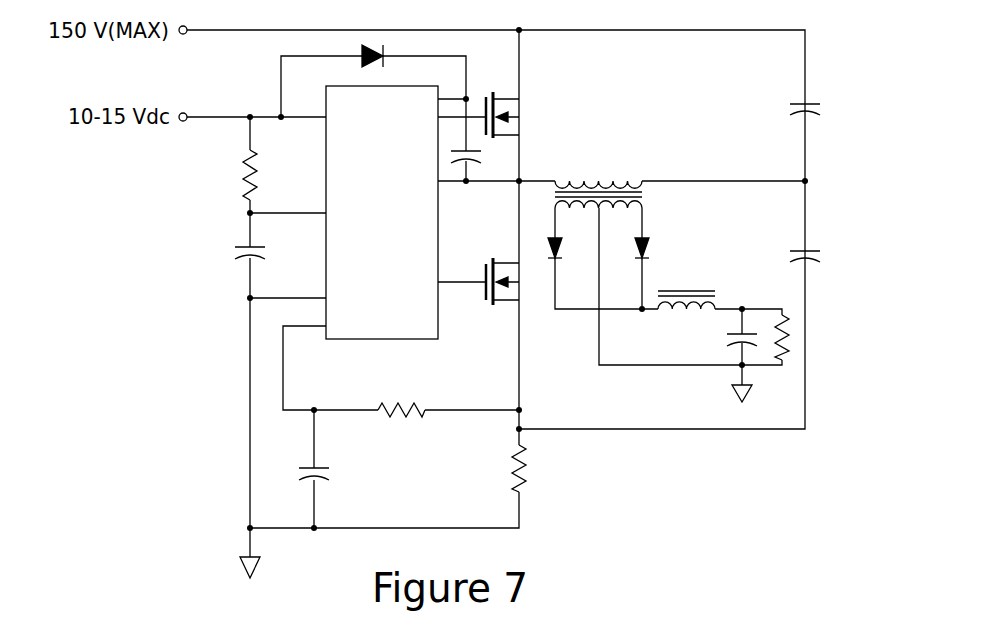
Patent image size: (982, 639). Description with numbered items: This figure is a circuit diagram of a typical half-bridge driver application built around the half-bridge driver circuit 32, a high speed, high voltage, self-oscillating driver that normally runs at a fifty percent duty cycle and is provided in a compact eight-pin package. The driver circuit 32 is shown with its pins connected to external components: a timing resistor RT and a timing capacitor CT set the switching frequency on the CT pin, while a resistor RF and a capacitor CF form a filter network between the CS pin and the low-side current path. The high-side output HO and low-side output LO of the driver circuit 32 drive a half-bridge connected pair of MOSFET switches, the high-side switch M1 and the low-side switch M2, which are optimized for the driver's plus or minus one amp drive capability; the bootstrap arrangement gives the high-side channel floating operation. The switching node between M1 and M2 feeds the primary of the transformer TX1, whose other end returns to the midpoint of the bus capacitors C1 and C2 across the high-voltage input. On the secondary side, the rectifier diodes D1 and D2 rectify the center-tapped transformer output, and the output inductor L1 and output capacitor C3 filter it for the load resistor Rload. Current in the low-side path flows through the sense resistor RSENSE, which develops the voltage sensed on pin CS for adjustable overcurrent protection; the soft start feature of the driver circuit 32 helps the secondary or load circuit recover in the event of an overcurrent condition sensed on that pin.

The half-bridge driver circuit 32 is at (420, 339).
The timing resistor RT is at (219, 175).
The timing capacitor CT is at (223, 256).
The feedback resistor RF is at (401, 396).
The feedback capacitor CF is at (333, 470).
The current sense resistor RSENSE is at (573, 468).
The high side MOSFET M1 is at (523, 115).
The low side MOSFET M2 is at (520, 298).
The transformer TX1 is at (598, 176).
The rectifier diode D1 is at (655, 233).
The rectifier diode D2 is at (543, 233).
The output inductor L1 is at (686, 288).
The bus capacitor C1 is at (831, 111).
The bus capacitor C2 is at (831, 258).
The output capacitor C3 is at (726, 346).
The load resistor Rload is at (823, 337).